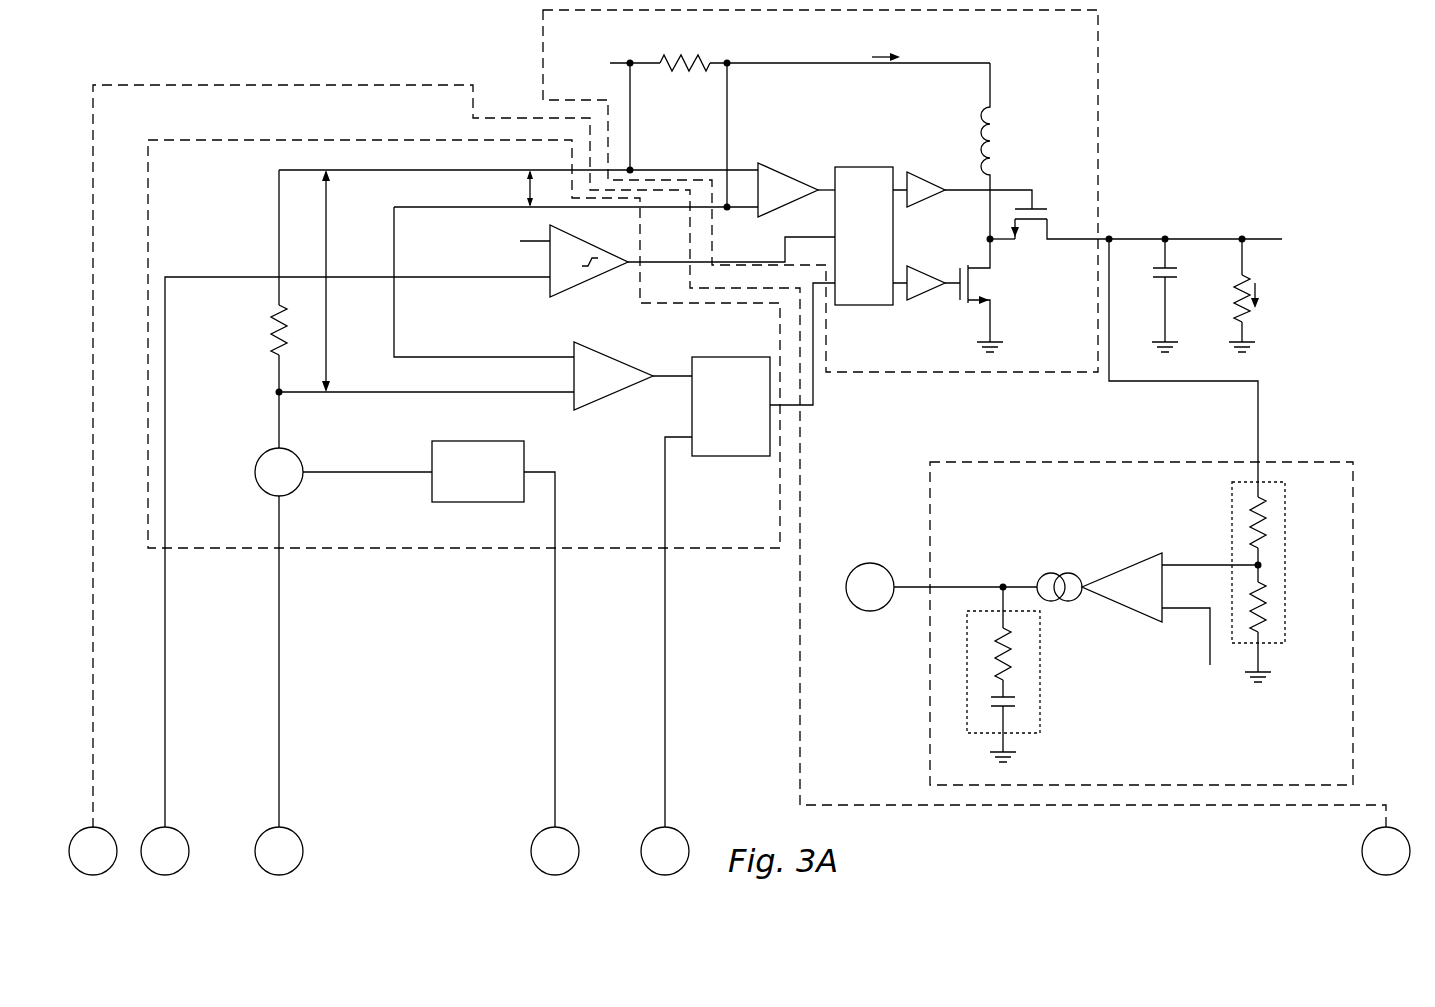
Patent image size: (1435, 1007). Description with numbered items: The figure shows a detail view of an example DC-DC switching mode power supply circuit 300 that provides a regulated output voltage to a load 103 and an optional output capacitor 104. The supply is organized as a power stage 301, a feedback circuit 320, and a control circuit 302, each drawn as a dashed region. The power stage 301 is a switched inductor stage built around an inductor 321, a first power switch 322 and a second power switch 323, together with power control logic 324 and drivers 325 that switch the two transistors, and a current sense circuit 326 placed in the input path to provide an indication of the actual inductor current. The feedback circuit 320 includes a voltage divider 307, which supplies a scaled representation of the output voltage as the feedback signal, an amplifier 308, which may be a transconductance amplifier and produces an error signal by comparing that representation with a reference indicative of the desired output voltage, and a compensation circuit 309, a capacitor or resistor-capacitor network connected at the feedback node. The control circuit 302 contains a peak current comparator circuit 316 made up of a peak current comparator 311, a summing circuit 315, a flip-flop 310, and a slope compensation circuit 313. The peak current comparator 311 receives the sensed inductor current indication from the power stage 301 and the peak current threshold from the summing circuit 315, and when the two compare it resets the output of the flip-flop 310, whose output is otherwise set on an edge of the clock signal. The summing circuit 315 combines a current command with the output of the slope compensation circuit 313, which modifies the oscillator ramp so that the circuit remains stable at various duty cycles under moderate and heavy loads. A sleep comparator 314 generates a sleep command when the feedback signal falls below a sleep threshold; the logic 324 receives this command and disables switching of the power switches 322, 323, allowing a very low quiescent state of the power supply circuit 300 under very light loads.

The DC-DC switching mode power supply circuit 300 is at (1350, 84).
The power stage 301 is at (1100, 44).
The control circuit 302 is at (92, 672).
The load 103 is at (1232, 308).
The output capacitor 104 is at (1180, 272).
The voltage divider 307 is at (1288, 566).
The amplifier 308 is at (1134, 562).
The compensation circuit 309 is at (1043, 673).
The flip-flop 310 is at (730, 357).
The peak current comparator 311 is at (613, 396).
The slope compensation circuit 313 is at (478, 441).
The sleep comparator 314 is at (596, 241).
The summing circuit 315 is at (255, 470).
The peak current comparator circuit 316 is at (395, 140).
The feedback circuit 320 is at (1140, 462).
The inductor 321 is at (984, 114).
The first power switch 322 is at (1040, 208).
The second power switch 323 is at (975, 282).
The power control logic 324 is at (864, 167).
The drivers 325 is at (932, 180).
The current sense circuit 326 is at (692, 62).